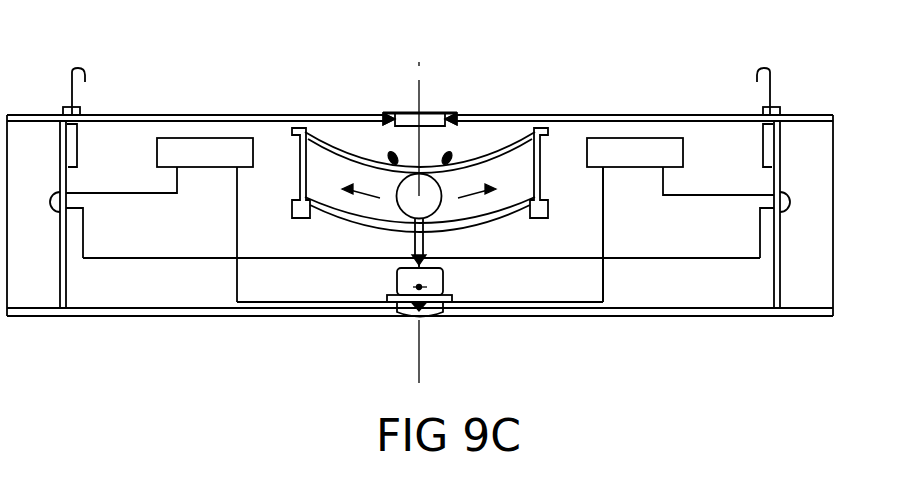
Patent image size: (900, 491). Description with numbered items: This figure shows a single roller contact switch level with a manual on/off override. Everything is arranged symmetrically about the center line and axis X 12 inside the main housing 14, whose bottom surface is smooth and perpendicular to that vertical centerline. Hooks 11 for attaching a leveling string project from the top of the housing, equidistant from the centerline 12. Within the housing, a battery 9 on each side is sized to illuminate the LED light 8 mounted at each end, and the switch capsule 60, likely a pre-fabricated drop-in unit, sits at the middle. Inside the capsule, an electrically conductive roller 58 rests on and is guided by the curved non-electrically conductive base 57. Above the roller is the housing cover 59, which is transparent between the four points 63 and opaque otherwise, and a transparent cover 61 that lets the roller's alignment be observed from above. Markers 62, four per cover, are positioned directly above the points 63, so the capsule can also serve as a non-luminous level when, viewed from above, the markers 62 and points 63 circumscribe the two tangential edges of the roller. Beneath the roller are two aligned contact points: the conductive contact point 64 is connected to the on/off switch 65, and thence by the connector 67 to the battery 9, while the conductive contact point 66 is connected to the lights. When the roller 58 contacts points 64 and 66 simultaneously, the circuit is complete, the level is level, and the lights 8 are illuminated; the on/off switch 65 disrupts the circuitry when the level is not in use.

The LED light 8 is at (50, 193).
The battery 9 is at (197, 142).
The hooks 11 is at (80, 68).
The center line and axis X 12 is at (418, 62).
The main housing 14 is at (700, 318).
The curved non-electrically conductive base 57 is at (378, 227).
The electrically conductive roller 58 is at (448, 211).
The housing cover for the roller 59 is at (426, 172).
The switch capsule 60 is at (286, 160).
The transparent cover 61 is at (428, 150).
The markers 62 is at (393, 157).
The points on roller cover housing 63 is at (382, 117).
The conductive contact point 64 is at (430, 247).
The on/off switch 65 is at (430, 313).
The conductive contact point 66 is at (412, 255).
The connector to battery 67 is at (607, 280).